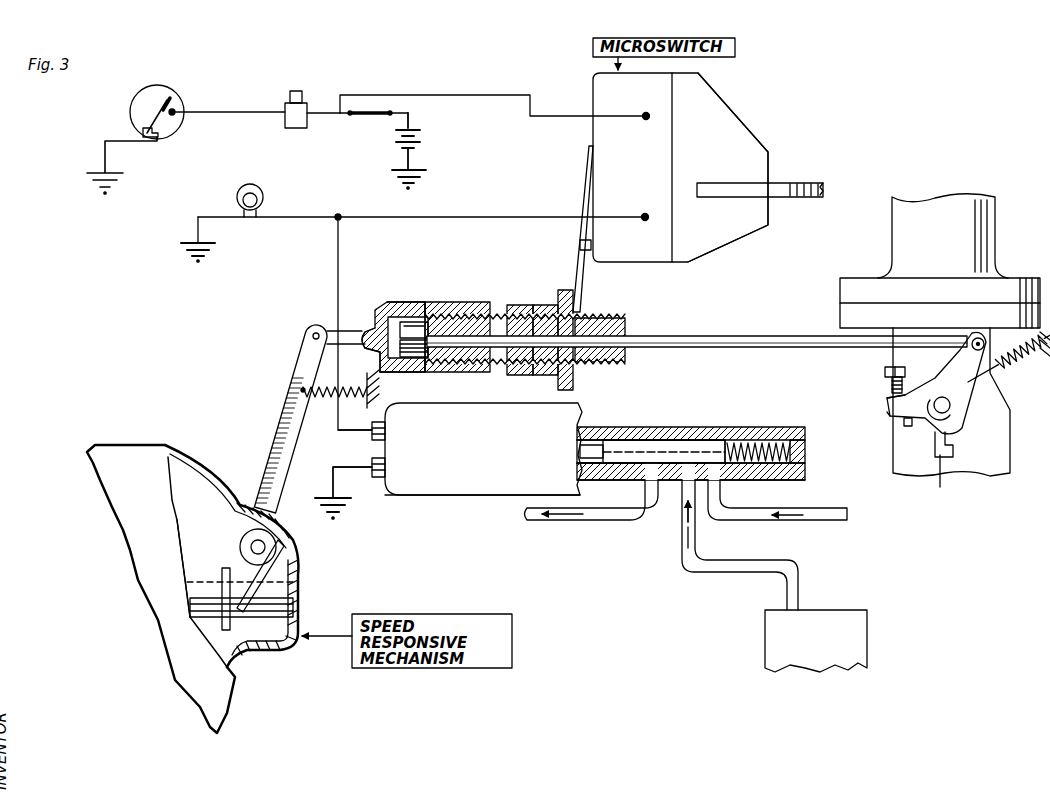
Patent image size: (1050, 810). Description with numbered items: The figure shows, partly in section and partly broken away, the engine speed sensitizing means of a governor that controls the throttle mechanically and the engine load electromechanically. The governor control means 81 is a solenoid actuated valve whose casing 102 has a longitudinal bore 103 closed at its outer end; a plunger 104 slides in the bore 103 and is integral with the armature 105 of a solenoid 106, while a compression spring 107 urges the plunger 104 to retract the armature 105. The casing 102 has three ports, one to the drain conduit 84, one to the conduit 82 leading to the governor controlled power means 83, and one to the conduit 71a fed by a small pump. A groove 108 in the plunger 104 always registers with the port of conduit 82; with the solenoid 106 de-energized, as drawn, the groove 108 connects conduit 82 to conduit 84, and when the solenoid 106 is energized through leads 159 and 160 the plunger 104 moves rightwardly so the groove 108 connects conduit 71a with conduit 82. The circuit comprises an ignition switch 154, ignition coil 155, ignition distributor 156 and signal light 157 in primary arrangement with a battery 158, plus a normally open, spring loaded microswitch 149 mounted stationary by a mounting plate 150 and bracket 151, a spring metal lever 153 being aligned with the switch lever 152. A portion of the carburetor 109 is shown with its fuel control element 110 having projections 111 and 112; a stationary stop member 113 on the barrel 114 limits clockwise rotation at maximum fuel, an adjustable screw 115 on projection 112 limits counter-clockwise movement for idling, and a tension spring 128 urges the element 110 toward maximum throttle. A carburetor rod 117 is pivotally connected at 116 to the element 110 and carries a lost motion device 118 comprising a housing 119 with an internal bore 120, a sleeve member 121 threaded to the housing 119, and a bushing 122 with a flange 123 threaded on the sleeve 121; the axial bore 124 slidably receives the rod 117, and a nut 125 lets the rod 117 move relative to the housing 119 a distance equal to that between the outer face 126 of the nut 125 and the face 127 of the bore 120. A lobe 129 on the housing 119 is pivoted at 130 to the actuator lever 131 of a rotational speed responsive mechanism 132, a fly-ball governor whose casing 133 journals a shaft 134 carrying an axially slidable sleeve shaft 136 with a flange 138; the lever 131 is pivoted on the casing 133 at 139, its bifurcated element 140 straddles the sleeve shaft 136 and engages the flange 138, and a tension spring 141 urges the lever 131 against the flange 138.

The ignition distributor 156 is at (180, 88).
The ignition coil 155 is at (297, 90).
The ignition switch 154 is at (372, 107).
The battery 158 is at (430, 143).
The signal light 157 is at (256, 184).
The electric microswitch 149 is at (647, 166).
The mounting plate 150 is at (732, 137).
The bracket 151 is at (788, 181).
The lever 153 is at (582, 195).
The switch lever 152 is at (587, 252).
The flange 123 is at (571, 289).
The housing 119 is at (395, 300).
The internal bore 120 is at (388, 300).
The lobe 129 is at (342, 334).
The pivot connection 130 is at (315, 325).
The nut 125 is at (408, 325).
The lost motion device 118 is at (453, 298).
The sleeve member 121 is at (498, 303).
The bushing 122 is at (528, 303).
The axial bore 124 is at (608, 330).
The carburetor rod 117 is at (739, 337).
The carburetor 109 is at (1004, 243).
The pivot connection 116 is at (977, 337).
The adjustable screw 115 is at (884, 372).
The projection 112 is at (886, 410).
The tension spring 128 is at (1045, 368).
The fuel control element 110 is at (964, 388).
The projection 111 is at (954, 437).
The stationary stop member 113 is at (941, 457).
The barrel 114 is at (903, 470).
The tension spring 141 is at (330, 378).
The actuator lever 131 is at (281, 443).
The face 127 is at (377, 348).
The outer face 126 is at (406, 360).
The armature 105 is at (604, 427).
The plunger 104 is at (623, 447).
The groove 108 is at (662, 456).
The casing 102 is at (705, 428).
The compression spring 107 is at (763, 437).
The rotational speed responsive mechanism 132 is at (186, 441).
The casing 133 is at (210, 478).
The lead 159 is at (357, 433).
The solenoid 106 is at (487, 456).
The longitudinal bore 103 is at (583, 474).
The sleeve shaft 136 is at (200, 550).
The flange 138 is at (225, 567).
The pivot 139 is at (280, 548).
The bifurcated element 140 is at (281, 573).
The shaft 134 is at (293, 600).
The lead 160 is at (358, 474).
The governor control valve 81 is at (465, 499).
The conduit 84 is at (624, 521).
The conduit 82 is at (779, 566).
The governor controlled power means 83 is at (874, 655).
The conduit 71a is at (837, 512).